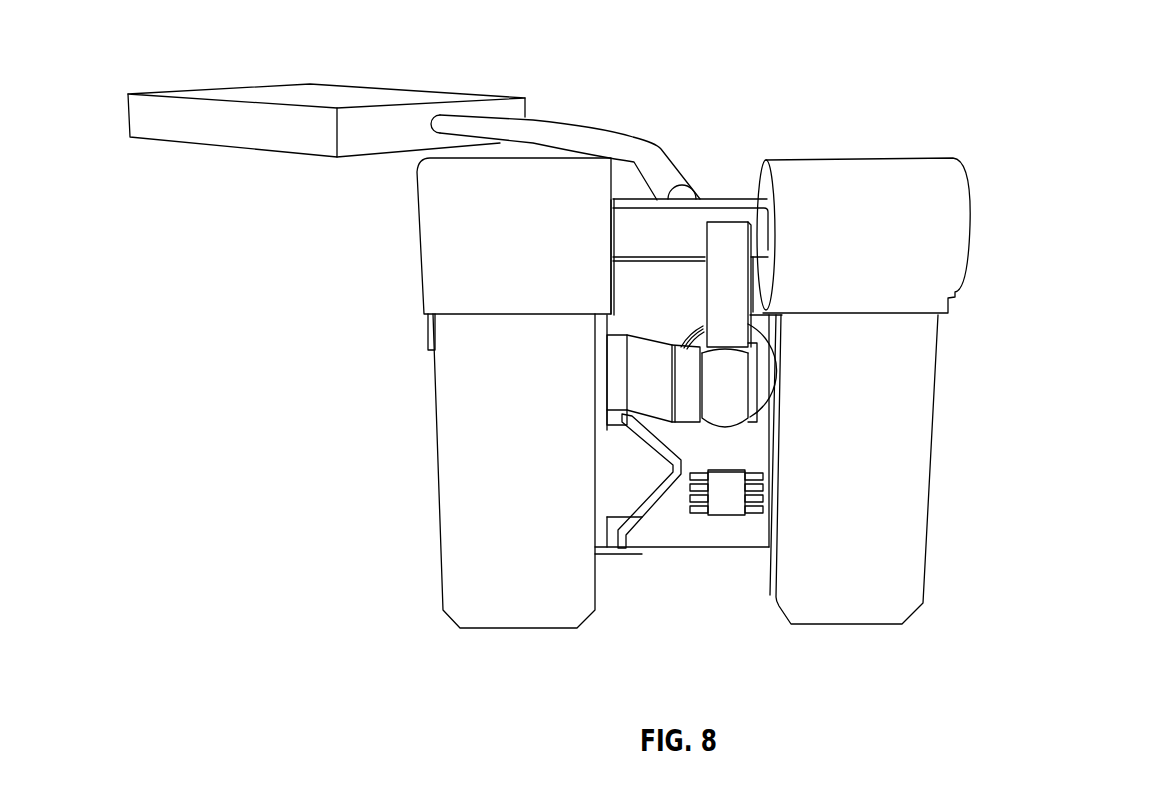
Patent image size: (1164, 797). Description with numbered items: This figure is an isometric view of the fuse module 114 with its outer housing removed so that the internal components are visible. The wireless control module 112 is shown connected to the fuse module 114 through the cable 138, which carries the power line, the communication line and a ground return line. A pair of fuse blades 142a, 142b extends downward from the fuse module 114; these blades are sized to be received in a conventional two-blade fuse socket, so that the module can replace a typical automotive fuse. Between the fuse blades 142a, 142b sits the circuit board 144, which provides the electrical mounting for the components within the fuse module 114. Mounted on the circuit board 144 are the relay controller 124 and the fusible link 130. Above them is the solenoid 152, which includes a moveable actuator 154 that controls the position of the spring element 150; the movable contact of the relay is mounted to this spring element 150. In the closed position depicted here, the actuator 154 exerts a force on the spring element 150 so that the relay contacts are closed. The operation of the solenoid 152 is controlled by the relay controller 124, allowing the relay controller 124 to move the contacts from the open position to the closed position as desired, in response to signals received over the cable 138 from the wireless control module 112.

The wireless control module 112 is at (373, 92).
The fuse module 114 is at (1053, 120).
The relay controller 124 is at (730, 490).
The fusible link 130 is at (645, 460).
The cable 138 is at (573, 137).
The fuse blade 142a is at (947, 538).
The fuse blade 142b is at (466, 546).
The circuit board 144 is at (719, 533).
The spring element 150 is at (687, 365).
The solenoid 152 is at (728, 255).
The moveable actuator 154 is at (728, 405).